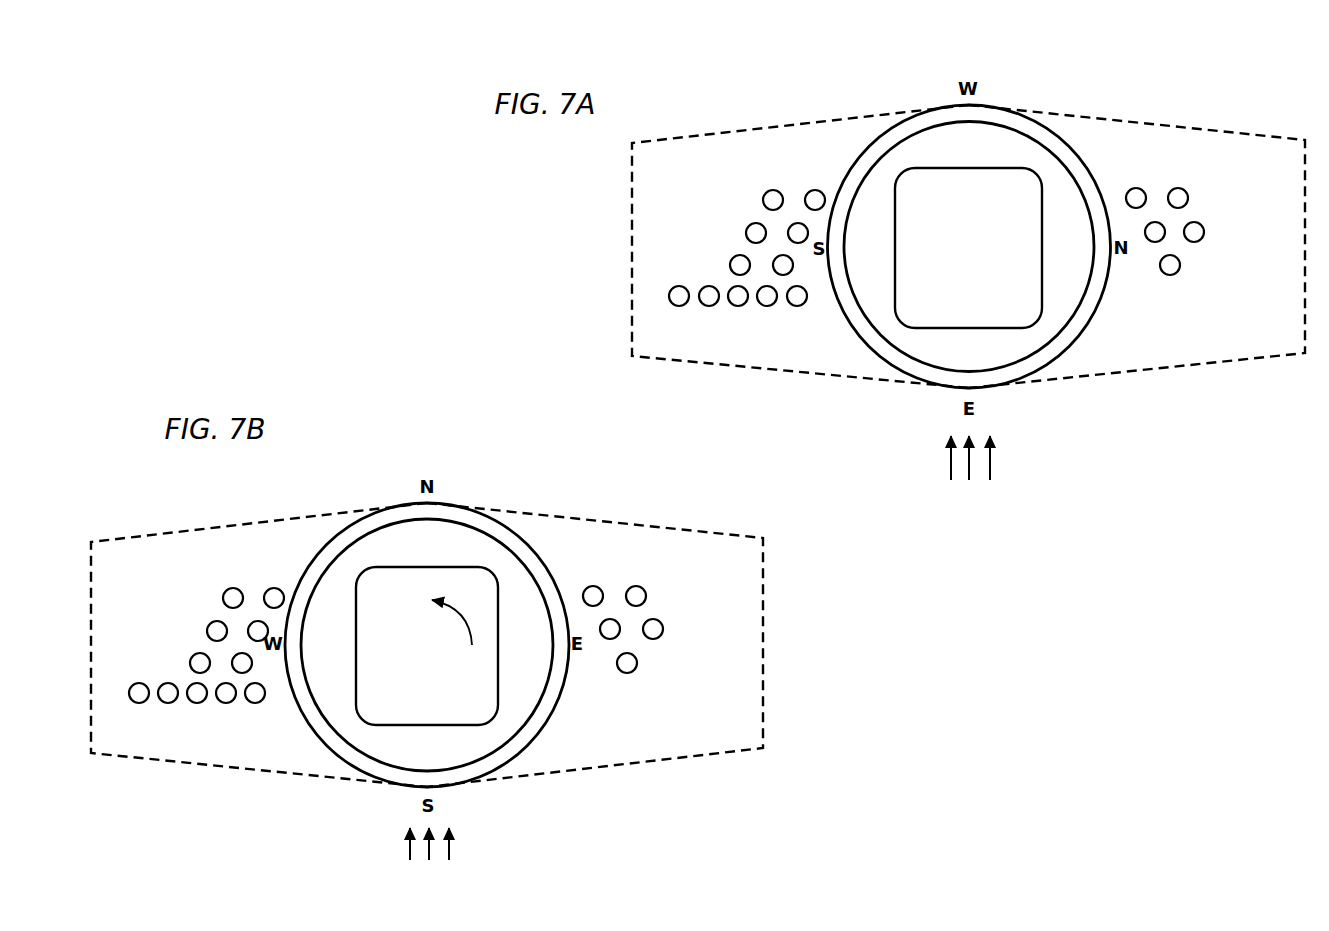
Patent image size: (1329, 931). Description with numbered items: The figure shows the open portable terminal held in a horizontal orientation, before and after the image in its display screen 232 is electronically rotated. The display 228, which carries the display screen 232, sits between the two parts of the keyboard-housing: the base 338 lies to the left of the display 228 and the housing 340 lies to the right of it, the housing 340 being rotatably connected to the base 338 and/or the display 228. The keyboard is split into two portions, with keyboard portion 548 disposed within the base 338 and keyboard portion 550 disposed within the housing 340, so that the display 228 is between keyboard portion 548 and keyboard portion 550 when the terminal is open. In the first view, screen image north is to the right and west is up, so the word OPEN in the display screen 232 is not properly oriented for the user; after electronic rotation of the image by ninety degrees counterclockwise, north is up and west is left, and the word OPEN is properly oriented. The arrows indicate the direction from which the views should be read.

In FIG. 7A, the display 228 is at (1045, 166).
In FIG. 7B, the display 228 is at (500, 565).
In FIG. 7A, the display screen 232 is at (1028, 257).
In FIG. 7B, the display screen 232 is at (488, 636).
In FIG. 7A, the base 338 is at (758, 129).
In FIG. 7B, the base 338 is at (262, 522).
In FIG. 7A, the housing 340 is at (1193, 127).
In FIG. 7B, the housing 340 is at (608, 522).
In FIG. 7A, the keyboard portion 548 is at (728, 233).
In FIG. 7B, the keyboard portion 548 is at (178, 630).
In FIG. 7A, the keyboard portion 550 is at (1215, 207).
In FIG. 7B, the keyboard portion 550 is at (668, 605).